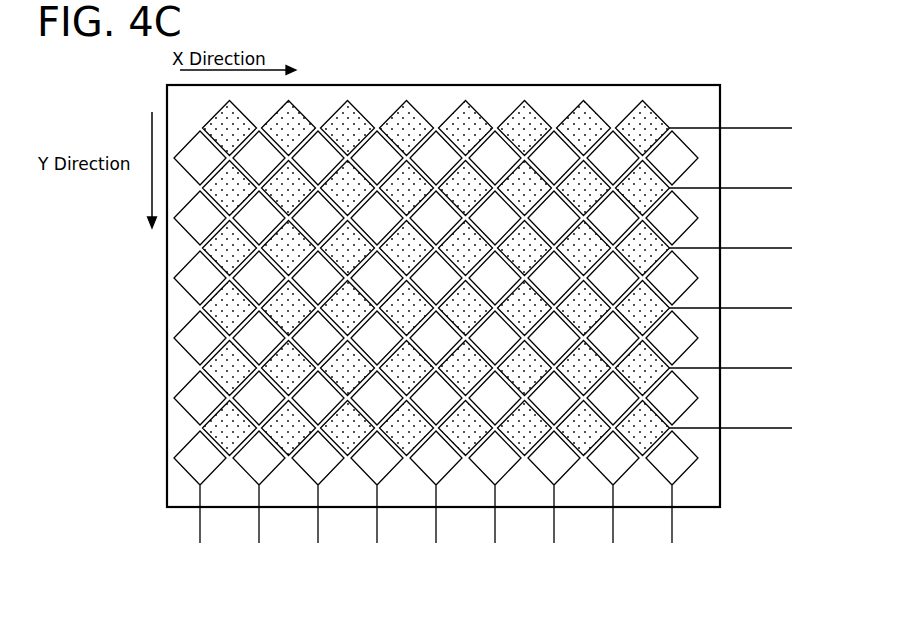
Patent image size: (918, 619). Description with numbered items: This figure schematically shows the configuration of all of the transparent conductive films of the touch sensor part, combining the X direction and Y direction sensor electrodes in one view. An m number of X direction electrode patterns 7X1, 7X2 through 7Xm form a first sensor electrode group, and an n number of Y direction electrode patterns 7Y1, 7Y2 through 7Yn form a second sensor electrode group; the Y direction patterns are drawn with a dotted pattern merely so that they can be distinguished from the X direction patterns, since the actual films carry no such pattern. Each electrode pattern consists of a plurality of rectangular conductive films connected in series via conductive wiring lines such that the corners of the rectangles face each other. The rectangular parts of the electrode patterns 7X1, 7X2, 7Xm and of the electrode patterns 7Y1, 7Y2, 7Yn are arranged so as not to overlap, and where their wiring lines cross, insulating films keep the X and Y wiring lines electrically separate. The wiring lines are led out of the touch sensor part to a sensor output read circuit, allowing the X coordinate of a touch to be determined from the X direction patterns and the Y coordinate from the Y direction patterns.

The X direction electrode pattern 7X1 is at (202, 532).
The X direction electrode pattern 7X2 is at (261, 532).
The X direction electrode pattern 7Xm is at (674, 532).
The Y direction electrode pattern 7Y1 is at (737, 128).
The Y direction electrode pattern 7Y2 is at (737, 188).
The Y direction electrode pattern 7Yn is at (737, 428).